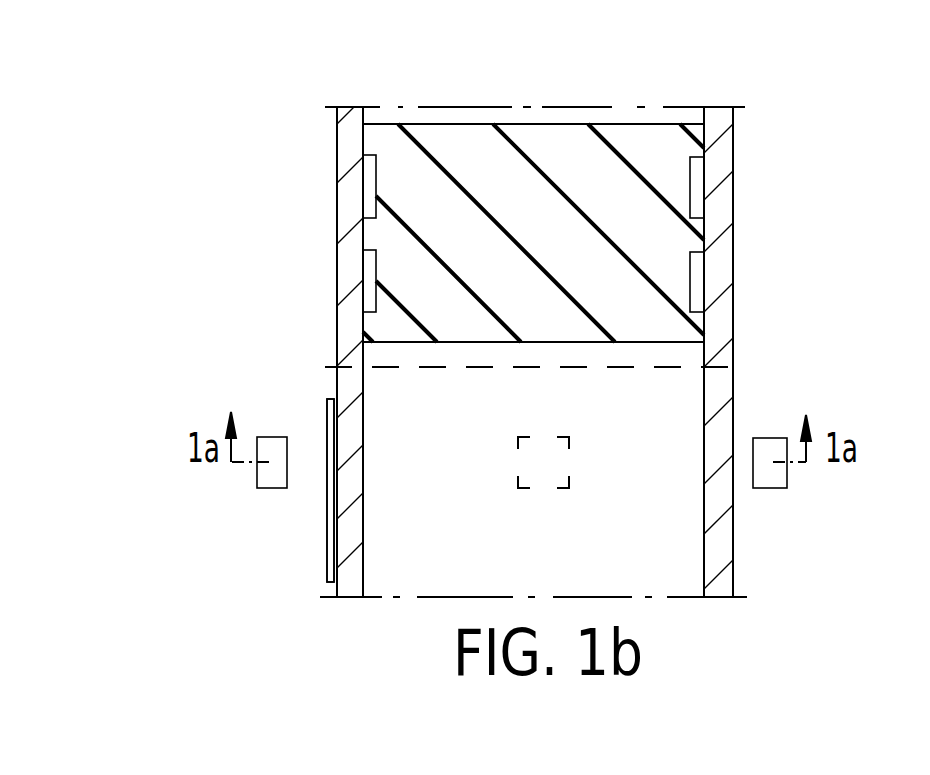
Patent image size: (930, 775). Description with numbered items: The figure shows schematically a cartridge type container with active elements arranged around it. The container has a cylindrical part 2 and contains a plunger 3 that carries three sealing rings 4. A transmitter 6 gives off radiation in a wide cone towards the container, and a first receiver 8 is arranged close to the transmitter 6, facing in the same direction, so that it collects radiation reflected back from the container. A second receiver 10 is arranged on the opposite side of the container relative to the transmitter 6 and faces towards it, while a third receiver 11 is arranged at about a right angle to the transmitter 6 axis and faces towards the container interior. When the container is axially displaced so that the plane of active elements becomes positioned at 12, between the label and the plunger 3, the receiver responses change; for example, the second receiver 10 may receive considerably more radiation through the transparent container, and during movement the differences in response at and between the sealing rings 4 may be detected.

The cylindrical part 2 is at (346, 281).
The plunger 3 is at (616, 126).
The sealing rings 4 is at (700, 324).
The transmitter 6 is at (267, 478).
The first receiver 8 is at (330, 490).
The second receiver 10 is at (765, 483).
The third receiver 11 is at (522, 478).
The plane of active elements 12 is at (331, 367).